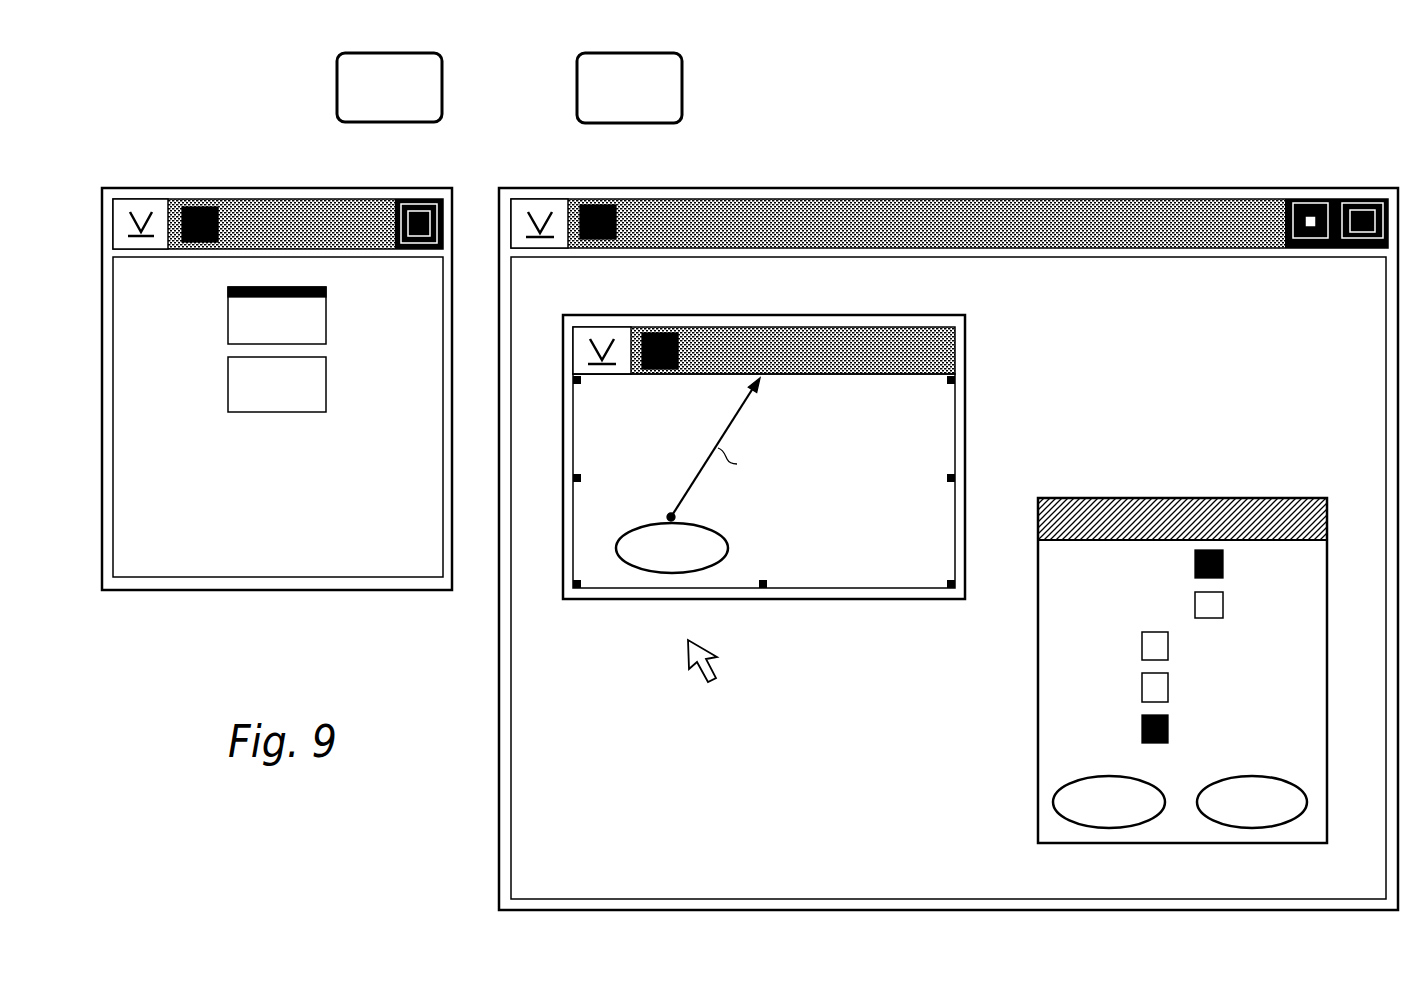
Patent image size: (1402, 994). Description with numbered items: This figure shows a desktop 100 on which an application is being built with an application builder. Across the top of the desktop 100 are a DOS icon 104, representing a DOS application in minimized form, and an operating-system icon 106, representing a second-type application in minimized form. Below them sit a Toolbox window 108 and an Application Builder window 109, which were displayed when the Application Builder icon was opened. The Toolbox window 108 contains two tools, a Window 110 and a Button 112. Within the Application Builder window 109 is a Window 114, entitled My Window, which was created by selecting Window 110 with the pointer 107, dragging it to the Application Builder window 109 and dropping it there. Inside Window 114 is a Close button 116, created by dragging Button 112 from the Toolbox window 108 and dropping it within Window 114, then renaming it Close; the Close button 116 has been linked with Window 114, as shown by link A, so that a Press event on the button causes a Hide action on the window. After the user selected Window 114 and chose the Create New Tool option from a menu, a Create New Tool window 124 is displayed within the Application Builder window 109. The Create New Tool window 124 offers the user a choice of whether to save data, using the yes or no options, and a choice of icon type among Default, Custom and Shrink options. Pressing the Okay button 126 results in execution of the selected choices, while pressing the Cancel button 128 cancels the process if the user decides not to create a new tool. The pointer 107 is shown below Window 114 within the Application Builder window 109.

The desktop 100 is at (886, 118).
The DOS icon 104 is at (442, 85).
The OS/2 icon 106 is at (682, 83).
The pointer 107 is at (716, 667).
The Toolbox window 108 is at (281, 370).
The Application Builder window 109 is at (940, 189).
The Window 110 is at (326, 303).
The Button 112 is at (326, 372).
The Window 114 is at (804, 457).
The Close button 116 is at (722, 530).
The Create New Tool window 124 is at (1186, 673).
The Okay button 126 is at (1130, 827).
The Cancel button 128 is at (1282, 827).